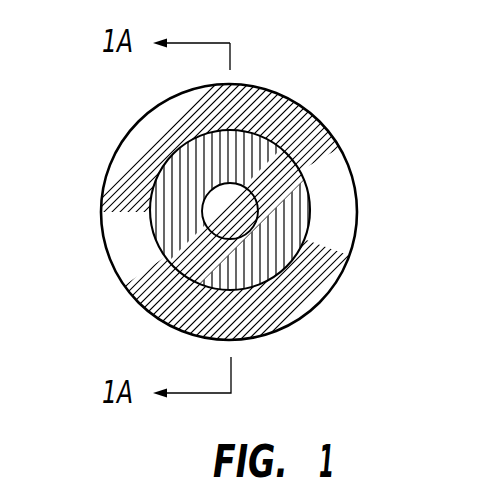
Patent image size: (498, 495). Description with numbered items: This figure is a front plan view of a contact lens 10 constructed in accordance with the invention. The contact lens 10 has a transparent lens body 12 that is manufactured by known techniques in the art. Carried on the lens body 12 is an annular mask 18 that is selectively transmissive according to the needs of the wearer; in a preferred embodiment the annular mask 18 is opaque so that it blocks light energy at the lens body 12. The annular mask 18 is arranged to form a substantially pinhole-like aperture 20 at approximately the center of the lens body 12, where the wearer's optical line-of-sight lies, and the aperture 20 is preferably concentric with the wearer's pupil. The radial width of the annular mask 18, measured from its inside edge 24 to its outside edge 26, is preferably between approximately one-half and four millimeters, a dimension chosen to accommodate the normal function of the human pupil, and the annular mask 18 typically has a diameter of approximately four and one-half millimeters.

The contact lens 10 is at (316, 78).
The lens body 12 is at (126, 272).
The annular mask 18 is at (302, 263).
The aperture 20 is at (200, 197).
The inside edge 24 is at (270, 189).
The outside edge 26 is at (326, 231).